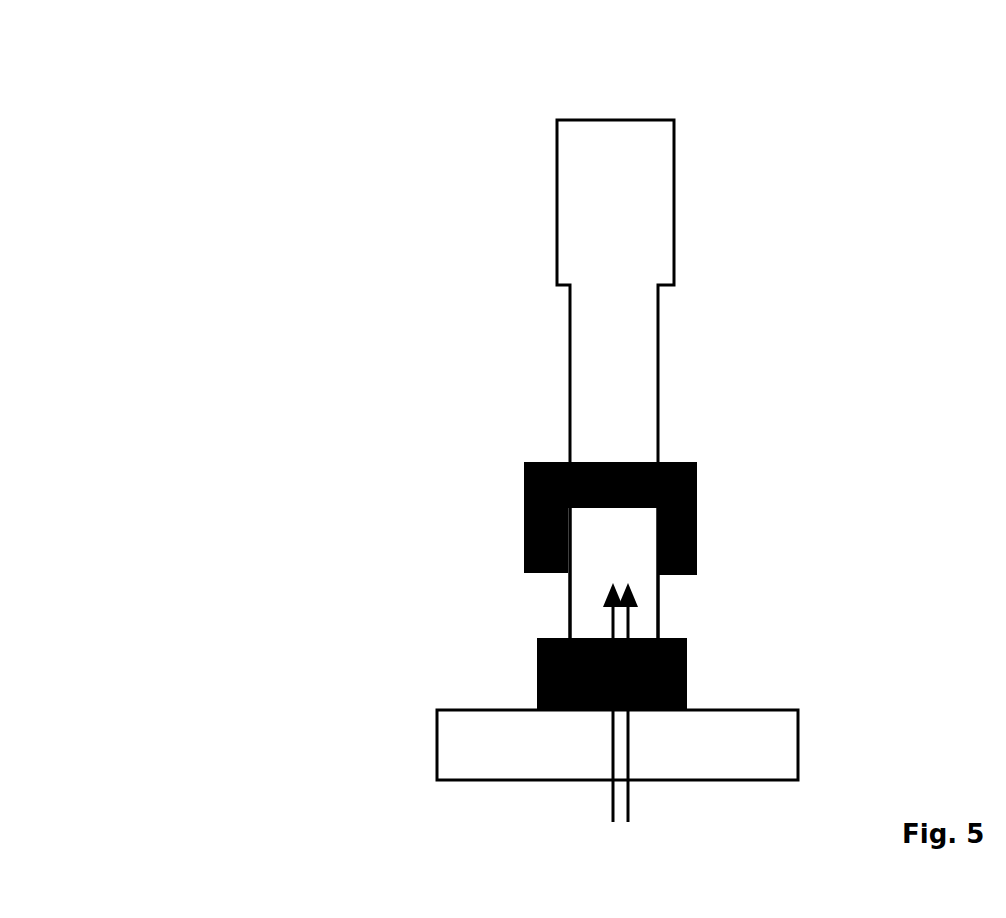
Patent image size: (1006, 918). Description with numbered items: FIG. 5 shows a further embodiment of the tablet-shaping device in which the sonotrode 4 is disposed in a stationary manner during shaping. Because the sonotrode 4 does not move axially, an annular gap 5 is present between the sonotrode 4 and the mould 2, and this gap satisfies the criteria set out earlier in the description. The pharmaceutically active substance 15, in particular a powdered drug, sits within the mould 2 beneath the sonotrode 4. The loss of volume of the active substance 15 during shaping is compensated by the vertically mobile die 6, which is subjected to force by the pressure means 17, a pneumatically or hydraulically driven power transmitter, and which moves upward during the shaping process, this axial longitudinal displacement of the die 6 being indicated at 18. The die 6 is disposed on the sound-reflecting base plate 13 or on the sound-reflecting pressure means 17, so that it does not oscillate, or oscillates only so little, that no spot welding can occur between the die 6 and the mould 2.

The sonotrode 4 is at (617, 233).
The mould 2 is at (520, 490).
The gap 5 is at (675, 452).
The pharmaceutically active substance 15 is at (567, 462).
The die 6 is at (598, 580).
The pressure means 17 is at (540, 670).
The sound-reflecting base plate 13 is at (520, 767).
The axial longitudinal displacement of the die 18 is at (622, 727).